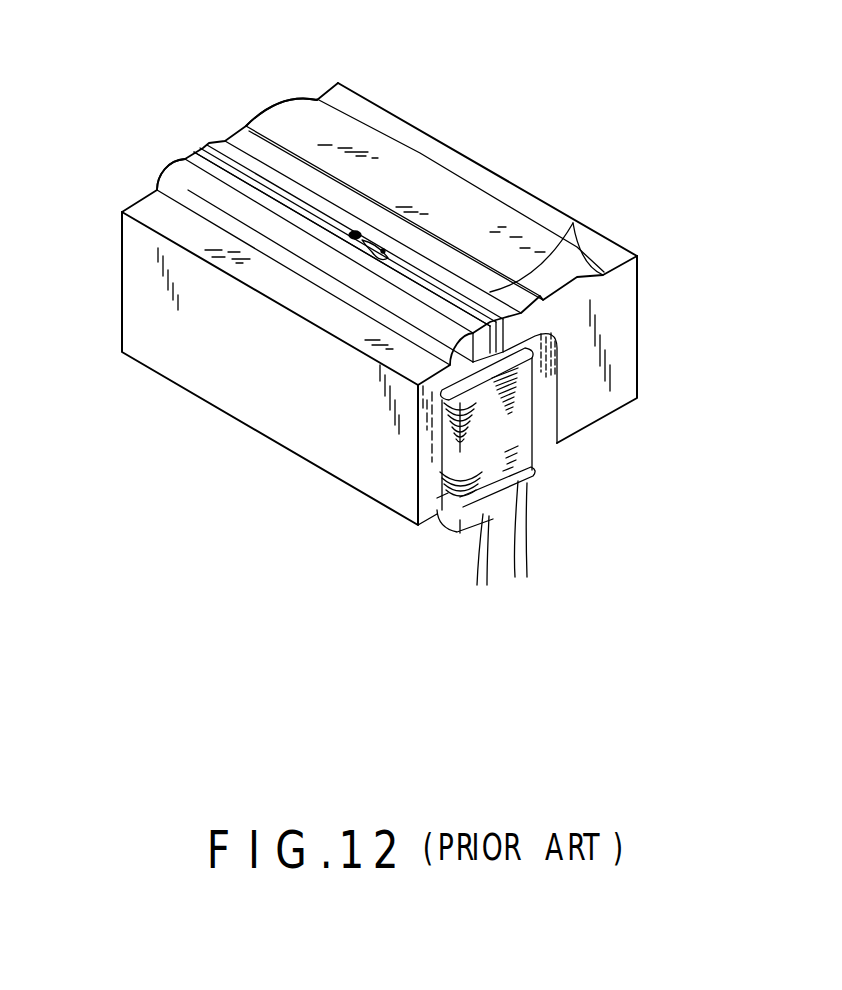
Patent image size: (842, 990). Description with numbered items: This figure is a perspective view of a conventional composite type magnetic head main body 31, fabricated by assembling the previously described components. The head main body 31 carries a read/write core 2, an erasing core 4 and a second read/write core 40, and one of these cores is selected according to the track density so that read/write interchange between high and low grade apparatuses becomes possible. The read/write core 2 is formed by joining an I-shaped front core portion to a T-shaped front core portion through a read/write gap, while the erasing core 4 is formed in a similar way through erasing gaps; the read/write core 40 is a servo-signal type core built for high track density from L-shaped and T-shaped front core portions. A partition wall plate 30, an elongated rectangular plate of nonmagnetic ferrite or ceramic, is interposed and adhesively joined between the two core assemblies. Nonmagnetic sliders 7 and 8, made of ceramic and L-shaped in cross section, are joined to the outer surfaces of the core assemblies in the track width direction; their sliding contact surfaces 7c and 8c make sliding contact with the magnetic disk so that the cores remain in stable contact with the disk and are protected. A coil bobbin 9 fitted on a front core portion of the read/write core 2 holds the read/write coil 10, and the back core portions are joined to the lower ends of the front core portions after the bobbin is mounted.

The composite type magnetic head main body 31 is at (478, 148).
The read/write core 2 is at (571, 226).
The erasing core 4 is at (208, 142).
The partition wall plate 30 is at (181, 193).
The read/write core 40 is at (233, 183).
The slider 7 is at (218, 380).
The sliding contact surface 7c is at (197, 190).
The slider 8 is at (622, 316).
The sliding contact surface 8c is at (250, 160).
The coil bobbin 9 is at (530, 478).
The read/write coil 10 is at (525, 432).